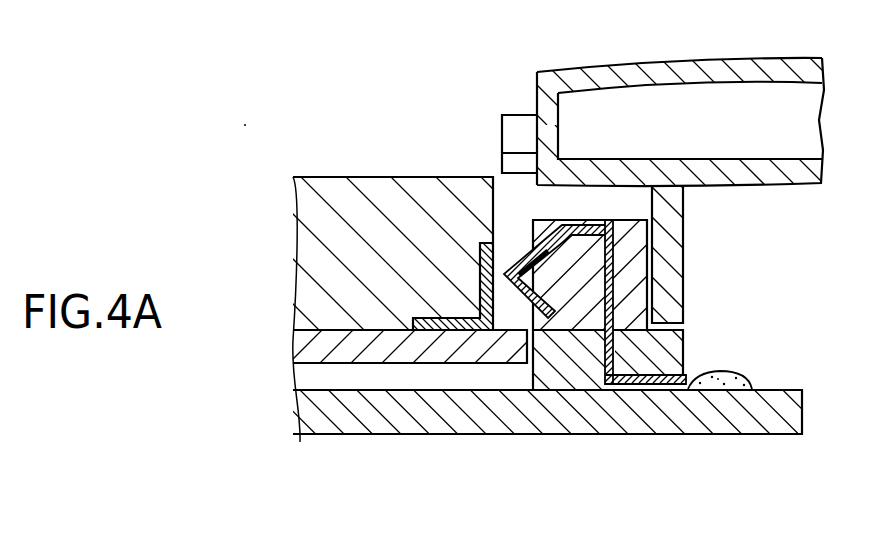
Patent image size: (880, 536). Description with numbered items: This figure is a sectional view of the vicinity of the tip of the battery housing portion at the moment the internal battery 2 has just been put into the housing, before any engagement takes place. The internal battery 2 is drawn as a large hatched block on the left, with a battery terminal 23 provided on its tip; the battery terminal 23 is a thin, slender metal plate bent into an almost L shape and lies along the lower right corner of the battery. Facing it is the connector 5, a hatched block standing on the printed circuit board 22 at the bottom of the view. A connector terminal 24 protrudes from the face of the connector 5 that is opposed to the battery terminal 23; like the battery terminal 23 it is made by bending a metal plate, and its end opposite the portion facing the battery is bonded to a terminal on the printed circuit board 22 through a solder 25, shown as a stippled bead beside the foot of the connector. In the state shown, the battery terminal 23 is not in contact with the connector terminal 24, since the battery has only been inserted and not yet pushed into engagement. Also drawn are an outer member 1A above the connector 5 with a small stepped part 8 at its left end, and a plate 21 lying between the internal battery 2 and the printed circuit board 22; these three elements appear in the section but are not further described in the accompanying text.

The casing 1A is at (692, 72).
The stub 8 is at (514, 135).
The internal battery 2 is at (320, 200).
The battery terminal 23 is at (479, 288).
The connector terminal 24 is at (517, 262).
The connector 5 is at (630, 250).
The solder 25 is at (735, 373).
The board 21 is at (343, 333).
The printed circuit board 22 is at (337, 420).